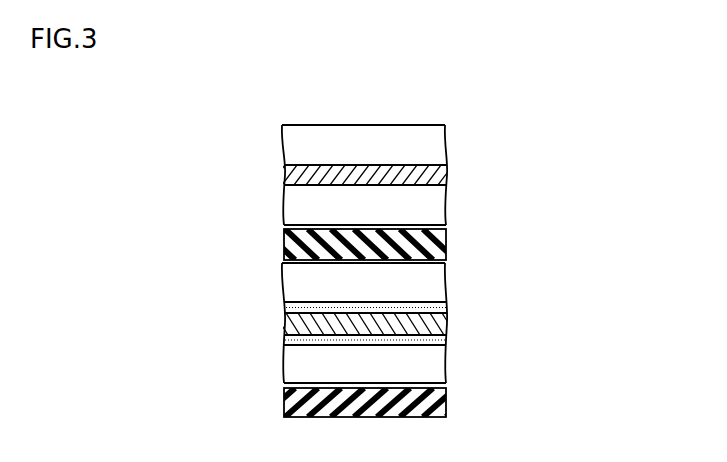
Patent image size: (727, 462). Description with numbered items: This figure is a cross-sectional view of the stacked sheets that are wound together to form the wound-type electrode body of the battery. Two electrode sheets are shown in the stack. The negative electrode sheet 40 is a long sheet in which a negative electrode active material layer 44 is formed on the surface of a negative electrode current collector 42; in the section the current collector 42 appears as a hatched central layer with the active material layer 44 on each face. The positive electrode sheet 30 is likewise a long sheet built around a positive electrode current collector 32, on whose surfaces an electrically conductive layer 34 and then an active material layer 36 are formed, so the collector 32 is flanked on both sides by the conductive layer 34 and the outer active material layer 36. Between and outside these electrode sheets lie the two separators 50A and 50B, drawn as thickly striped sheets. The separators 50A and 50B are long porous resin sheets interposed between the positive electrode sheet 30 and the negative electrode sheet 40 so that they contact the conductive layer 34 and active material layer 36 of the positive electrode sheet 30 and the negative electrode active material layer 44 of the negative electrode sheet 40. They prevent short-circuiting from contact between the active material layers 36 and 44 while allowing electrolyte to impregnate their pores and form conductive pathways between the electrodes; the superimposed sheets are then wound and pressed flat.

The positive electrode sheet 30 is at (267, 265).
The positive electrode current collector 32 is at (447, 322).
The electrically conductive layer 34 is at (447, 306).
The active material layer 36 is at (447, 268).
The negative electrode sheet 40 is at (267, 127).
The negative electrode current collector 42 is at (447, 178).
The negative electrode active material layer 44 is at (447, 140).
The separator 50A is at (283, 247).
The separator 50B is at (283, 410).